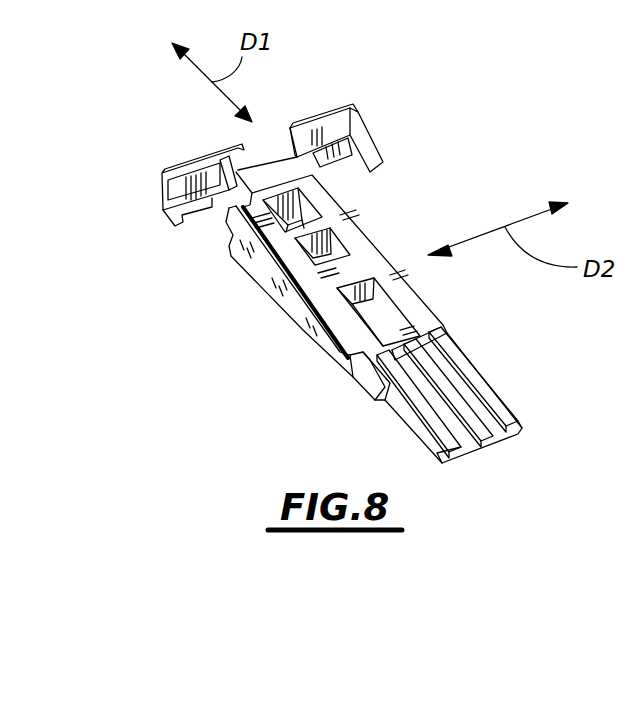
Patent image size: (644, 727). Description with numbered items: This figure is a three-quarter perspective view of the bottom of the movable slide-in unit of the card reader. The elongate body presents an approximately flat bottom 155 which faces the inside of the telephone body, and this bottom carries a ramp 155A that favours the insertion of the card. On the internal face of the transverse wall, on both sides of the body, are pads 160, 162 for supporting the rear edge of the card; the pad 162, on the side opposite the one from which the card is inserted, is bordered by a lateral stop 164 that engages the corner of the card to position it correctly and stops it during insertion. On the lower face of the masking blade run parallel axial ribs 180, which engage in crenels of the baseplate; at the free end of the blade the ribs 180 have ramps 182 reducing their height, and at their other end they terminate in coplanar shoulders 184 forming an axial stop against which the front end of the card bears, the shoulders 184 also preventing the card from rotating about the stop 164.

The bottom 155 is at (300, 296).
The ramp 155A is at (385, 272).
The pad 160 is at (352, 175).
The pad 162 is at (199, 228).
The lateral stop 164 is at (180, 230).
The axial ribs 180 is at (475, 362).
The ramps 182 is at (503, 397).
The shoulders 184 is at (440, 323).